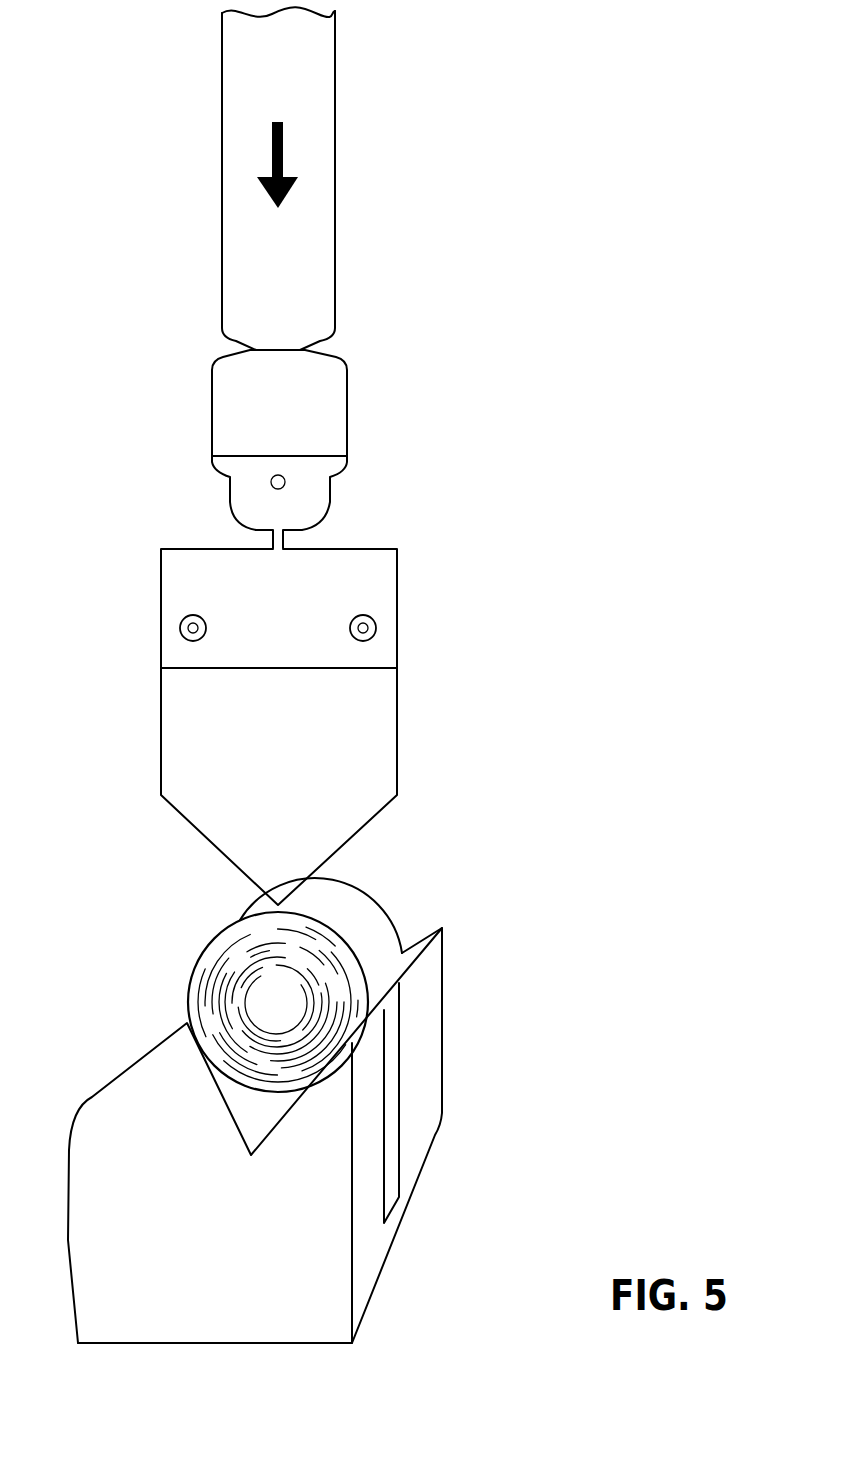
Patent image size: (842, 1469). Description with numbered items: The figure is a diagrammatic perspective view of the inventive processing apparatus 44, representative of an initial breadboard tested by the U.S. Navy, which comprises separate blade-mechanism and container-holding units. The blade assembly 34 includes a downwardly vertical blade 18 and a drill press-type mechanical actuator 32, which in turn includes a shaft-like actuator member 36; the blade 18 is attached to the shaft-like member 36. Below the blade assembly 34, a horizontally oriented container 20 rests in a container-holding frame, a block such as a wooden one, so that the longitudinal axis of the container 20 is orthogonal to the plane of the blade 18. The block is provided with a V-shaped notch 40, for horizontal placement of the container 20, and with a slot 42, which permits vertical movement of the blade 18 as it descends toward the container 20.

The blade 18 is at (400, 688).
The container 20 is at (187, 963).
The drill press-type mechanical actuator 32 is at (398, 315).
The blade assembly 34 is at (407, 436).
The shaft-like actuator member 36 is at (338, 147).
The V-shaped notch 40 is at (187, 1050).
The slot 42 is at (390, 1187).
The processing apparatus 44 is at (522, 139).